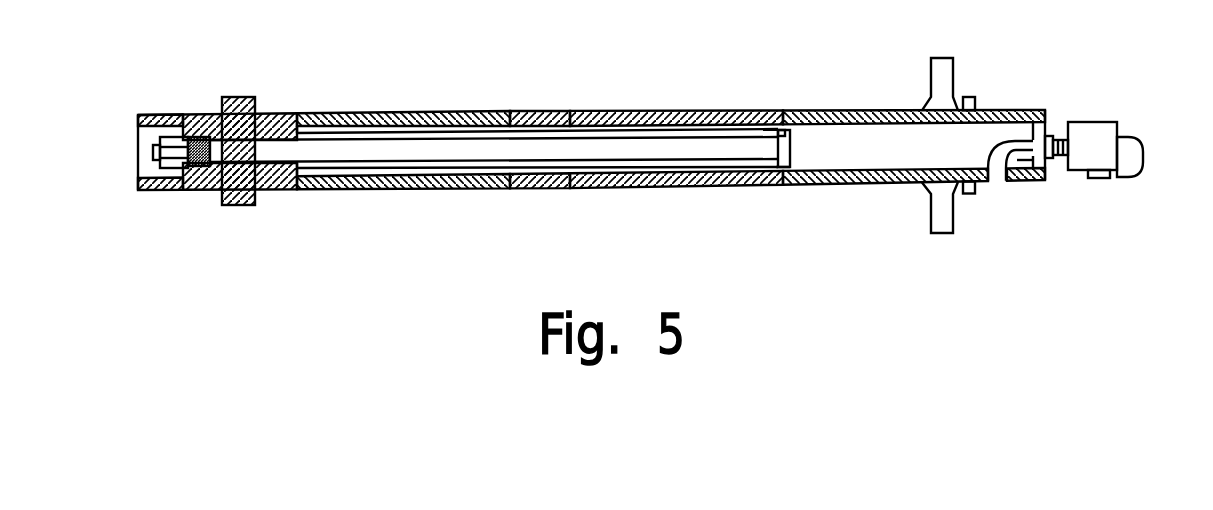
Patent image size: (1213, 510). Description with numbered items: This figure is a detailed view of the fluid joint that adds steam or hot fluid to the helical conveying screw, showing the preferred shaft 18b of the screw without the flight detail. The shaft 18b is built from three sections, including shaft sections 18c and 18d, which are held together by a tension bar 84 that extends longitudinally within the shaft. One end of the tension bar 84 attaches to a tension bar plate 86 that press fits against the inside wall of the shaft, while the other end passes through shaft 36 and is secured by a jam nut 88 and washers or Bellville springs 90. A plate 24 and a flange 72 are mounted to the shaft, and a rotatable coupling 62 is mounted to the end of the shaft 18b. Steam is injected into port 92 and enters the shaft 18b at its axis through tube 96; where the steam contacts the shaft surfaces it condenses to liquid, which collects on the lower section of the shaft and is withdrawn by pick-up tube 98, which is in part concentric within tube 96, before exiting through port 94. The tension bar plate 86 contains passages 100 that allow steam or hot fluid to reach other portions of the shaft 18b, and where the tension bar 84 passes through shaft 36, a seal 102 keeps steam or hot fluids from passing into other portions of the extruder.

The shaft 18b is at (694, 106).
The shaft section 18c is at (430, 111).
The shaft section 18d is at (570, 111).
The plate 24 is at (956, 72).
The shaft 36 is at (241, 96).
The rotatable coupling 62 is at (1100, 122).
The flange 72 is at (977, 107).
The tension bar 84 is at (389, 152).
The tension bar plate 86 is at (789, 183).
The jam nut 88 is at (172, 190).
The washers or Bellville springs 90 is at (163, 115).
The port 92 is at (1142, 165).
The port 94 is at (1102, 178).
The tube 96 is at (1040, 132).
The pick-up tube 98 is at (1012, 181).
The passages 100 is at (776, 183).
The seal 102 is at (308, 127).